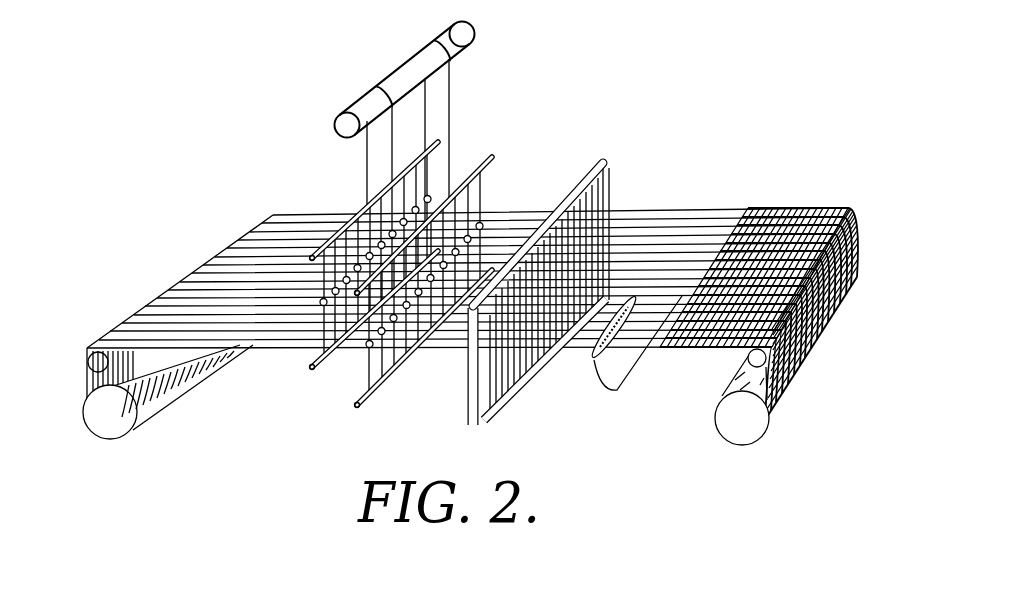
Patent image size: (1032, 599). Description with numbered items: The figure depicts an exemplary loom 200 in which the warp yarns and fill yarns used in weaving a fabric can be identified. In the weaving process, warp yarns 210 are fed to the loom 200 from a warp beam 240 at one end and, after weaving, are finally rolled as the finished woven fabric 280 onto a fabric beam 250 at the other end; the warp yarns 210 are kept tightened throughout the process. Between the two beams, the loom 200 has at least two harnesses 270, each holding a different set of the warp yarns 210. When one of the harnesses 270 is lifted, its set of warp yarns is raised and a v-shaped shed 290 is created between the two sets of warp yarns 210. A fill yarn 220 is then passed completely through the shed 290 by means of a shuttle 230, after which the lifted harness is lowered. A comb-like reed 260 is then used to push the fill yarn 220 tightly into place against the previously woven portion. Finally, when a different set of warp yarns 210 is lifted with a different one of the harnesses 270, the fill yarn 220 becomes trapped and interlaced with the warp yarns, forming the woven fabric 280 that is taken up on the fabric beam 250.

The loom 200 is at (482, 259).
The warp yarns 210 is at (671, 193).
The fill yarn 220 is at (628, 396).
The shuttle 230 is at (589, 374).
The warp beam 240 is at (99, 442).
The fabric beam 250 is at (758, 445).
The reed 260 is at (609, 157).
The harnesses 270 is at (347, 420).
The woven fabric 280 is at (828, 203).
The shed 290 is at (557, 349).